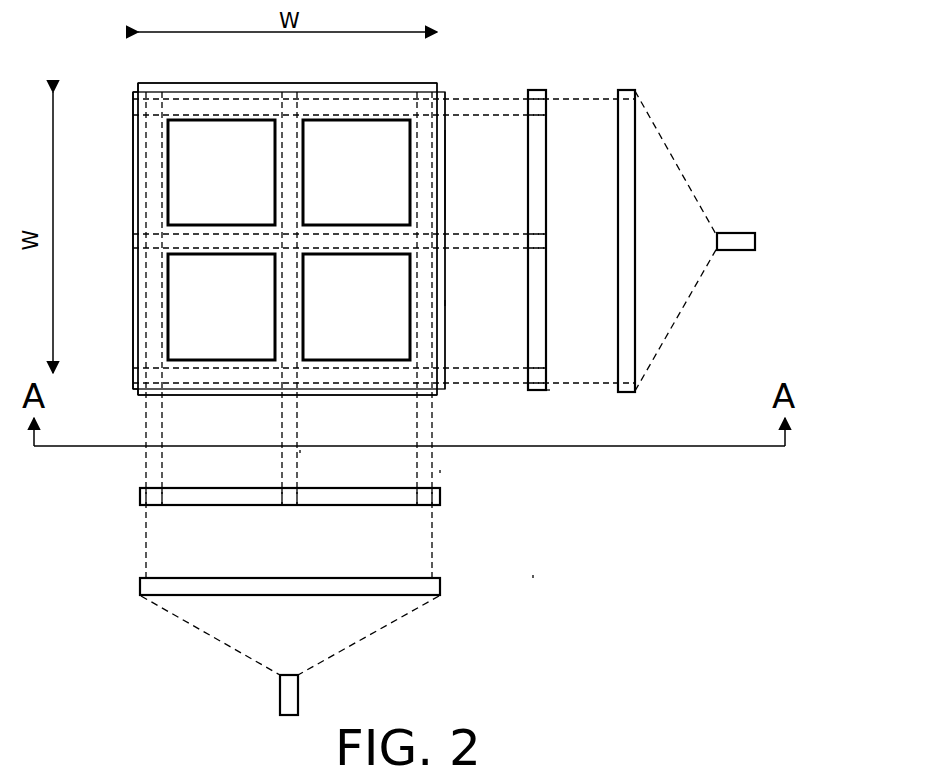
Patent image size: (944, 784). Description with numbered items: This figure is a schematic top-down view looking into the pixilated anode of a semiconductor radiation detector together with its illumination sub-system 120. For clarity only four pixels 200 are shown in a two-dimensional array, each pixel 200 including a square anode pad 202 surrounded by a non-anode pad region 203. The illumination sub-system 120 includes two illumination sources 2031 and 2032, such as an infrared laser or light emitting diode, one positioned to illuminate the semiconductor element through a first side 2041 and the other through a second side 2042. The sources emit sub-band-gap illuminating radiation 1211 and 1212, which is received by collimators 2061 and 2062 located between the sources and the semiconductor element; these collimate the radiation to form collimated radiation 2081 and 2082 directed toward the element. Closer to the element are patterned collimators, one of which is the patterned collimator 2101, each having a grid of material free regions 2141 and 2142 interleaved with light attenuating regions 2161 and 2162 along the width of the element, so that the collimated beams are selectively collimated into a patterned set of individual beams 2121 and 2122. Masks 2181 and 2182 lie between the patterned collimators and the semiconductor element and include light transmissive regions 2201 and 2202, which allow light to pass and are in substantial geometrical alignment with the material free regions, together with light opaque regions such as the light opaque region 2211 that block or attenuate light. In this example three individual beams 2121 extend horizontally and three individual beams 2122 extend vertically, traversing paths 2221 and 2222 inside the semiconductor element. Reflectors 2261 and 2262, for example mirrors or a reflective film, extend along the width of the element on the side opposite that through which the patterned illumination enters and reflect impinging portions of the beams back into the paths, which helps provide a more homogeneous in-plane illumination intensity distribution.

The illumination sub-system 120 is at (680, 508).
The sub-band-gap illuminating radiation 1211 is at (665, 151).
The sub-band-gap illuminating radiation 1212 is at (228, 642).
The pixel 200 is at (220, 90).
The anode pad 202 is at (202, 185).
The non-anode pad region 203 is at (371, 90).
The illumination source 2031 is at (733, 234).
The illumination source 2032 is at (283, 700).
The first side 2041 is at (455, 305).
The second side 2042 is at (326, 456).
The collimator 2061 is at (635, 391).
The collimator 2062 is at (440, 584).
The collimated radiation 2081 is at (627, 90).
The collimated radiation 2082 is at (440, 543).
The patterned collimator 2101 is at (537, 90).
The individual beams 2121 is at (508, 396).
The individual beams 2122 is at (448, 461).
The material free regions 2141 is at (545, 107).
The material free regions 2142 is at (140, 496).
The light attenuating regions 2161 is at (545, 180).
The light attenuating regions 2162 is at (203, 505).
The mask 2181 is at (445, 83).
The mask 2182 is at (138, 393).
The light transmissive regions 2201 is at (443, 107).
The light transmissive regions 2202 is at (156, 396).
The light opaque regions 2211 is at (442, 152).
The paths 2221 is at (140, 107).
The paths 2222 is at (158, 90).
The reflector 2261 is at (133, 379).
The reflector 2262 is at (136, 86).